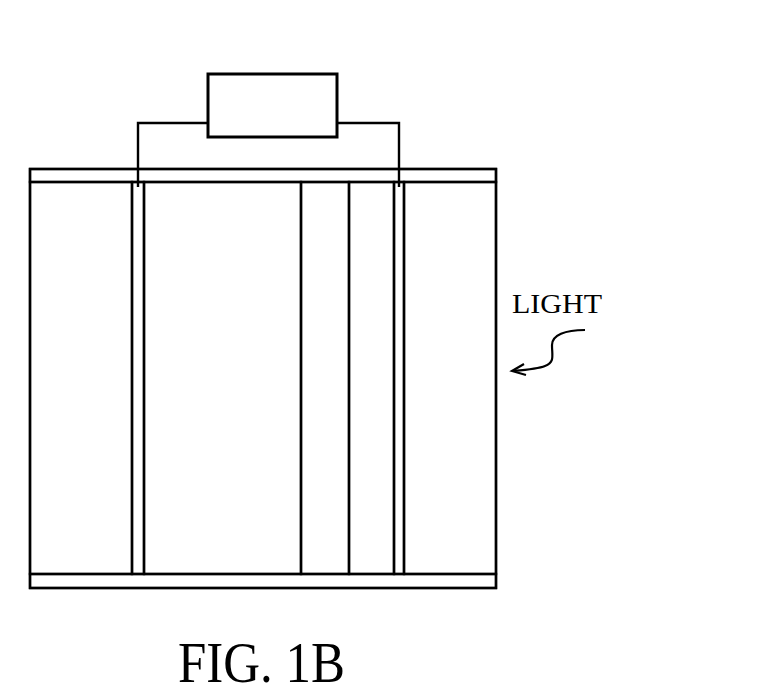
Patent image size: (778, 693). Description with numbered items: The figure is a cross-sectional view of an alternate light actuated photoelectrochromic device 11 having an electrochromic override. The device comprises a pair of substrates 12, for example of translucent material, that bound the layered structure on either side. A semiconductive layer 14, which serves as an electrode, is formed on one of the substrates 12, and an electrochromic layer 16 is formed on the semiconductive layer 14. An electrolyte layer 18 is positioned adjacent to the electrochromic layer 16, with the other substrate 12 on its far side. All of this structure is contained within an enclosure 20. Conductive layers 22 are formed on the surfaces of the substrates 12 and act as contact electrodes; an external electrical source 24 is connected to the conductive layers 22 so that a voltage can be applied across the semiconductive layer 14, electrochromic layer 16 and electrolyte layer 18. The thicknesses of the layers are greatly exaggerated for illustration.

The photoelectrochromic device 11 is at (508, 221).
The substrate 12 is at (94, 279).
The semiconductive layer 14 is at (385, 276).
The electrochromic layer 16 is at (339, 276).
The electrolyte layer 18 is at (208, 279).
The enclosure 20 is at (428, 166).
The conductive layer 22 is at (140, 558).
The external electrical source 24 is at (327, 102).